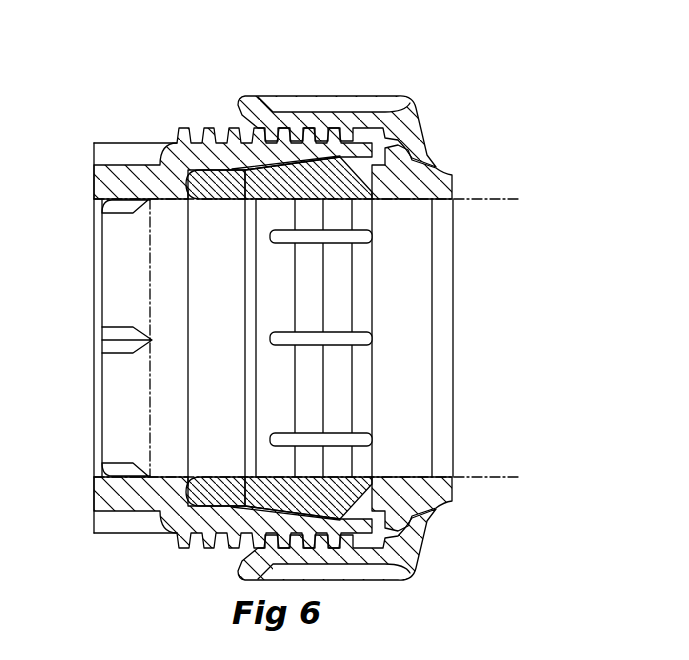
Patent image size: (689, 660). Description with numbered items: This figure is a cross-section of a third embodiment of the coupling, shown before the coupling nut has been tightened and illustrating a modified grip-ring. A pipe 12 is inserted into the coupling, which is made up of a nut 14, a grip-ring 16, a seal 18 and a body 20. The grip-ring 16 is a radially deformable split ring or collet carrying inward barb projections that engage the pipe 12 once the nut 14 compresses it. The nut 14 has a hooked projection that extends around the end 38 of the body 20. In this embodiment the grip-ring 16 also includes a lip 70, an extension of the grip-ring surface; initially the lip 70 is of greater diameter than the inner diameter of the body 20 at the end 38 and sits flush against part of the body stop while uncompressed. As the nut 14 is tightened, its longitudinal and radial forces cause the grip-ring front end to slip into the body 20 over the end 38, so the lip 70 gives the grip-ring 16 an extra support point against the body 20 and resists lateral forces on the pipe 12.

The pipe 12 is at (480, 197).
The nut 14 is at (422, 167).
The grip-ring 16 is at (374, 199).
The seal 18 is at (224, 170).
The body 20 is at (123, 166).
The end of the body 38 is at (334, 157).
The lip 70 is at (392, 106).